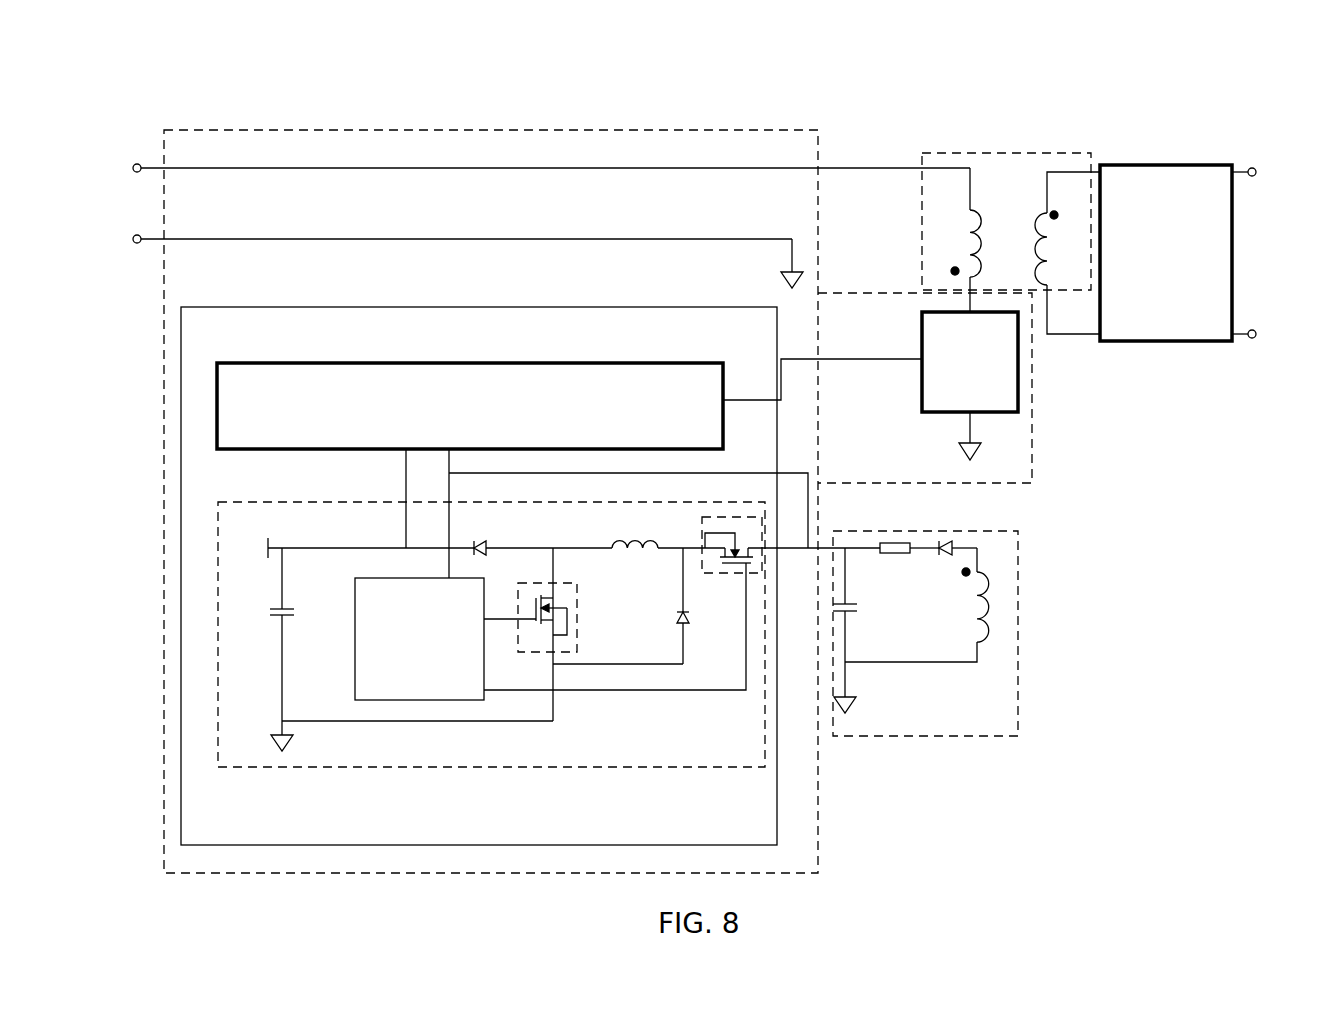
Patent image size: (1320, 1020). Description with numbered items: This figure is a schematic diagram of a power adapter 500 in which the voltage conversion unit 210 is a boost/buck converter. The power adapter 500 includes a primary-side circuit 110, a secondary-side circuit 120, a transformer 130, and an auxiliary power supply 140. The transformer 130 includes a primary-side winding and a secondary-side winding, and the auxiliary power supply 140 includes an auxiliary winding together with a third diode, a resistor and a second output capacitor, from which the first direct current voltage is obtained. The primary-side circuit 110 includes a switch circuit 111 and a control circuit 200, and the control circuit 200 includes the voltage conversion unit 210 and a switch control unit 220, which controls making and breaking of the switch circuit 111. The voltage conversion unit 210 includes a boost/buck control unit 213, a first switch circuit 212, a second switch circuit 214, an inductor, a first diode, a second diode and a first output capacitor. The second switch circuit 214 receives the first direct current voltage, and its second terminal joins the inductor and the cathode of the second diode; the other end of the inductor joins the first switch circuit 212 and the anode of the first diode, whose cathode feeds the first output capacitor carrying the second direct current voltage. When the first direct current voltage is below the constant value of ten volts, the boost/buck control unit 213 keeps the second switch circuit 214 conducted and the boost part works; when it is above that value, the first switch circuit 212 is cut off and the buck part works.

The power adapter 500 is at (171, 91).
The primary-side circuit 110 is at (760, 126).
The switch circuit 111 is at (925, 325).
The secondary-side circuit 120 is at (1160, 165).
The transformer 130 is at (1062, 153).
The auxiliary power supply 140 is at (1019, 550).
The control circuit 200 is at (213, 306).
The voltage conversion unit 210 is at (234, 501).
The first switch circuit 212 is at (518, 607).
The boost/buck control unit 213 is at (384, 577).
The second switch circuit 214 is at (712, 516).
The switch control unit 220 is at (689, 362).